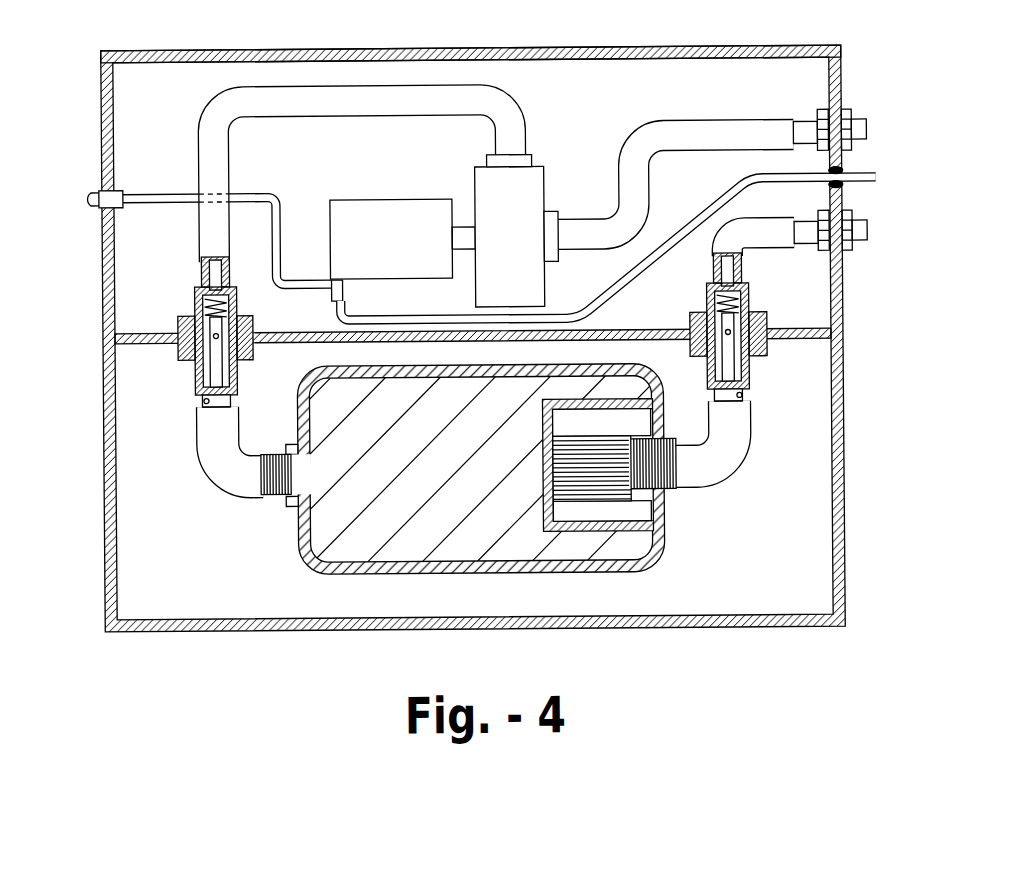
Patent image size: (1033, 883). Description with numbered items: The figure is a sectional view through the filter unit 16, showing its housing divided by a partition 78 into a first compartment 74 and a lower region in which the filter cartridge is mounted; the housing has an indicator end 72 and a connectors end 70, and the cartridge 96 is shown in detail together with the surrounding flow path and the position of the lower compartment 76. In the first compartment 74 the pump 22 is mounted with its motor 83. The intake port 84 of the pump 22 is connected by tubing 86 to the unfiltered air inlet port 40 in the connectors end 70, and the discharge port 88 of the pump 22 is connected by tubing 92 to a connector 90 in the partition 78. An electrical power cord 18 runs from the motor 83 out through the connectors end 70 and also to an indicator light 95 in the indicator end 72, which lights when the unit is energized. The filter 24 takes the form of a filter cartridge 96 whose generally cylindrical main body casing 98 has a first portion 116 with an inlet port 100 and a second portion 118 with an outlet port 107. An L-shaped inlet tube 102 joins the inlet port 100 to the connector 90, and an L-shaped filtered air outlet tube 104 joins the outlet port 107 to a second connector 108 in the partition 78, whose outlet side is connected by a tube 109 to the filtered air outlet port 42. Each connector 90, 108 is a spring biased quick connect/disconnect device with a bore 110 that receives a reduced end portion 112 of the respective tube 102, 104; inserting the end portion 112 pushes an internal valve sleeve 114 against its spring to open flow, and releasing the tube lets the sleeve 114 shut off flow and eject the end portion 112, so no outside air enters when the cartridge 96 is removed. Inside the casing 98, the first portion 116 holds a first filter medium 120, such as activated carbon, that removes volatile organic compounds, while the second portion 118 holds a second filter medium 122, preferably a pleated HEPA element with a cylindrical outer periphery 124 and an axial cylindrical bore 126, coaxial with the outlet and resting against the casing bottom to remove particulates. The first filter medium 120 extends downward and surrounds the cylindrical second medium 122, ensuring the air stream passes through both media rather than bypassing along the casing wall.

The filter unit 16 is at (147, 655).
The electrical power cord 18 is at (857, 179).
The pump 22 is at (513, 203).
The filter 24 is at (732, 502).
The unfiltered air inlet port 40 is at (858, 132).
The filtered air outlet port 42 is at (860, 240).
The connectors end 70 is at (842, 77).
The indicator end 72 is at (100, 72).
The first compartment 74 is at (135, 116).
The lower compartment 76 is at (170, 520).
The partition 78 is at (150, 345).
The pump motor 83 is at (363, 223).
The intake port 84 is at (558, 220).
The tubing 86 is at (655, 142).
The discharge port 88 is at (522, 157).
The connector 90 is at (190, 298).
The tubing 92 is at (233, 107).
The indicator light 95 is at (106, 190).
The filter cartridge 96 is at (432, 573).
The main body casing 98 is at (502, 573).
The inlet port 100 is at (295, 500).
The inlet tube 102 is at (240, 473).
The filtered air outlet tube 104 is at (726, 445).
The outlet port 107 is at (628, 503).
The connector 108 is at (752, 362).
The tube 109 is at (762, 231).
The bore 110 is at (200, 398).
The reduced end portion 112 is at (223, 400).
The internal valve sleeve 114 is at (186, 322).
The first portion 116 is at (525, 572).
The second portion 118 is at (588, 572).
The first filter medium 120 is at (370, 573).
The second filter medium 122 is at (645, 512).
The cylindrical outer periphery 124 is at (663, 540).
The cylindrical bore 126 is at (665, 523).